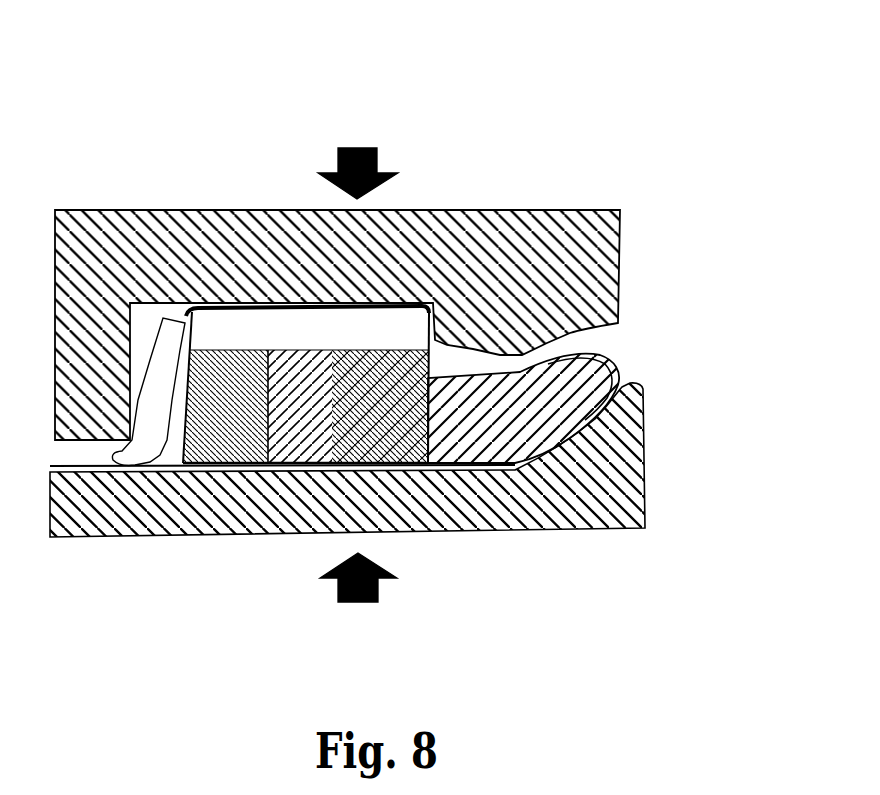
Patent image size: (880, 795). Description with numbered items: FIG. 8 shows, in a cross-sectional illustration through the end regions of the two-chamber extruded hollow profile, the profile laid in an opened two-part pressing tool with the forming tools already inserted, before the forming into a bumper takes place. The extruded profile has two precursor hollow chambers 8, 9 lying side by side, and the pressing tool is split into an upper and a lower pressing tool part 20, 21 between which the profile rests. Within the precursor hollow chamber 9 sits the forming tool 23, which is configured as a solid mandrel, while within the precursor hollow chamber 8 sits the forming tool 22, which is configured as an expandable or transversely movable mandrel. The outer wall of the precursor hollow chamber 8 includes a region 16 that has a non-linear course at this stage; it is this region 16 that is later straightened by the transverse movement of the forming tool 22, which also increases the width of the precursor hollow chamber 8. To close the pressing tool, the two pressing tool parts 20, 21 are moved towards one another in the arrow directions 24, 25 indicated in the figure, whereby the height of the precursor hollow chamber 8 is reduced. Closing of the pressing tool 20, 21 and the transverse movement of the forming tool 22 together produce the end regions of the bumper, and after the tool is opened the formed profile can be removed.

The precursor hollow chamber 8 is at (385, 318).
The precursor hollow chamber 9 is at (613, 367).
The region of an outer wall 16 is at (122, 391).
The pressing tool part 20 is at (586, 220).
The pressing tool part 21 is at (603, 532).
The forming tool 22 is at (285, 315).
The forming tool 23 is at (510, 430).
The arrow direction 24 is at (380, 153).
The arrow direction 25 is at (338, 587).